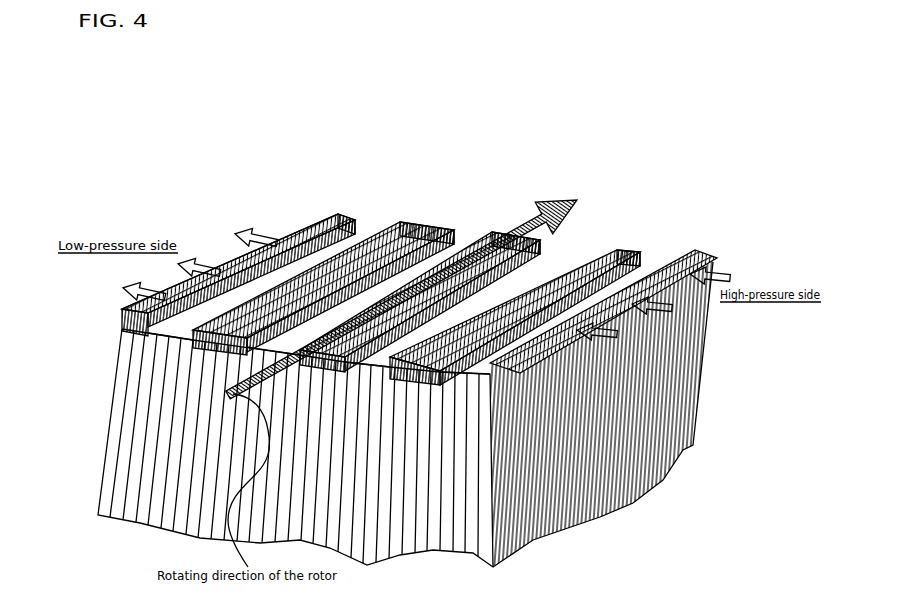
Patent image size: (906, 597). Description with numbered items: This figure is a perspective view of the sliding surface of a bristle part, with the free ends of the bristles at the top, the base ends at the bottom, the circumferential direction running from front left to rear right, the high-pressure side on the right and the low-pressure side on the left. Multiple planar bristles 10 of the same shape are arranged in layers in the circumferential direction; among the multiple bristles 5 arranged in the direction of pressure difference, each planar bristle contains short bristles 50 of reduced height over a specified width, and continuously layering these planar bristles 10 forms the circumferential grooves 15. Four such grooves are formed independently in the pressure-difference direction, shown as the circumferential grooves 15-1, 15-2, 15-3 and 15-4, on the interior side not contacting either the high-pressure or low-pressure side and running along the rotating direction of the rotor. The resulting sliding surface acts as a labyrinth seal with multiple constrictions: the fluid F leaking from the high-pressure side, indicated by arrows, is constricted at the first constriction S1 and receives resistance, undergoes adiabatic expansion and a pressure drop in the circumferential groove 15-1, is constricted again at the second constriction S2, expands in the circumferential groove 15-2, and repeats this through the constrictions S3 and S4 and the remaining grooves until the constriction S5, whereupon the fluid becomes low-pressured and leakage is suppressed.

The bristles 5 is at (133, 367).
The planar bristles 10 is at (116, 328).
The short bristles 50 is at (135, 432).
The circumferential grooves 15 is at (455, 249).
The circumferential groove 15-1 is at (603, 276).
The circumferential groove 15-2 is at (560, 255).
The circumferential groove 15-3 is at (453, 243).
The circumferential groove 15-4 is at (352, 230).
The first constriction S1 is at (699, 258).
The second constriction S2 is at (620, 243).
The constriction S3 is at (487, 243).
The constriction S4 is at (460, 240).
The constriction S5 is at (347, 226).
The fluid F is at (247, 230).